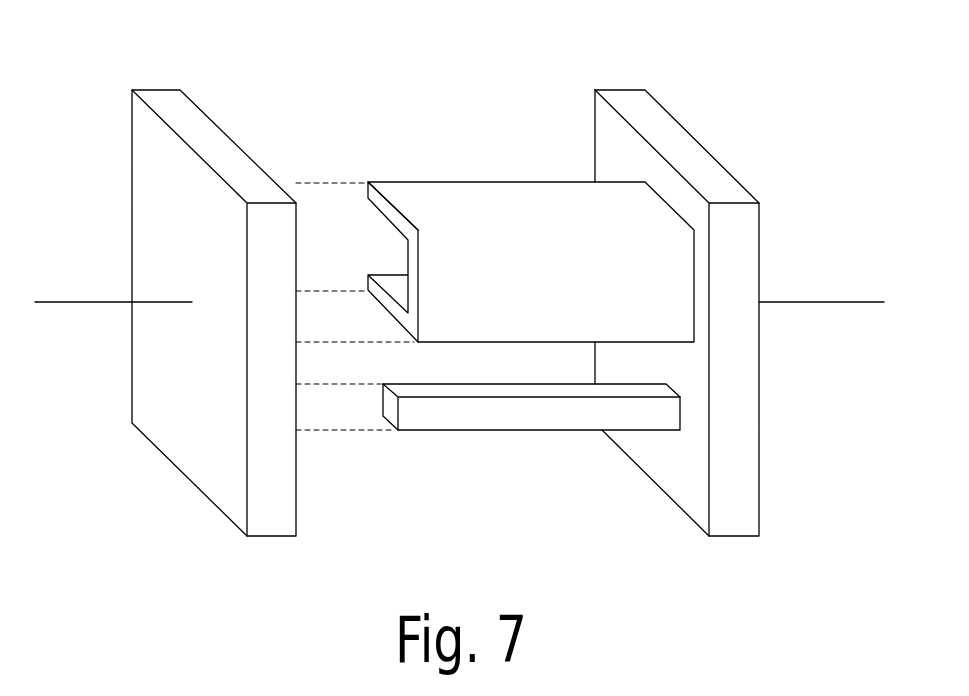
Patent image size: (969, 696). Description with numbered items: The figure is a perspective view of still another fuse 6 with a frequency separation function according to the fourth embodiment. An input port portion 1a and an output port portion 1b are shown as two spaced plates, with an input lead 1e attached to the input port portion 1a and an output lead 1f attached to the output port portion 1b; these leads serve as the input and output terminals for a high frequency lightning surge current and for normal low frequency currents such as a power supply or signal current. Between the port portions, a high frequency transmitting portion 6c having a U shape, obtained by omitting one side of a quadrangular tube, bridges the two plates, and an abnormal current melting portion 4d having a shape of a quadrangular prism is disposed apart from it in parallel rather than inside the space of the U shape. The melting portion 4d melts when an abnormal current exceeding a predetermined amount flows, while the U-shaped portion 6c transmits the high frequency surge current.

The input port portion 1a is at (155, 88).
The output port portion 1b is at (622, 88).
The input lead 1e is at (83, 301).
The output lead 1f is at (840, 301).
The fuse with a frequency separation function 6 is at (495, 248).
The high frequency transmitting portion 6c is at (503, 182).
The abnormal current melting portion 4d is at (540, 432).